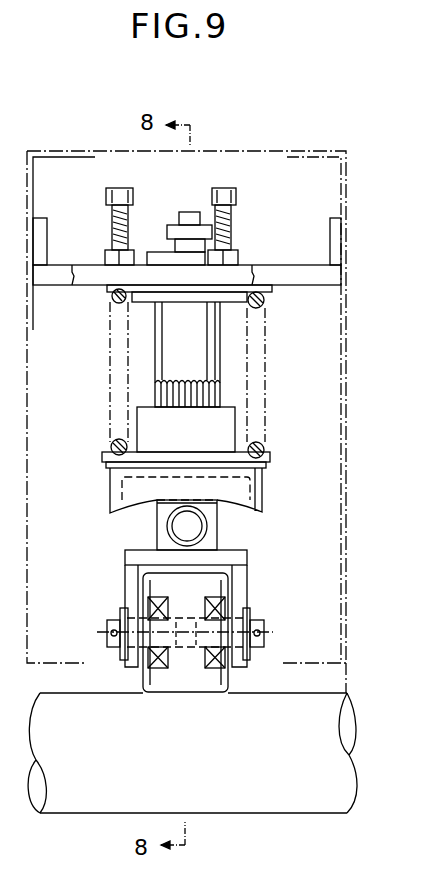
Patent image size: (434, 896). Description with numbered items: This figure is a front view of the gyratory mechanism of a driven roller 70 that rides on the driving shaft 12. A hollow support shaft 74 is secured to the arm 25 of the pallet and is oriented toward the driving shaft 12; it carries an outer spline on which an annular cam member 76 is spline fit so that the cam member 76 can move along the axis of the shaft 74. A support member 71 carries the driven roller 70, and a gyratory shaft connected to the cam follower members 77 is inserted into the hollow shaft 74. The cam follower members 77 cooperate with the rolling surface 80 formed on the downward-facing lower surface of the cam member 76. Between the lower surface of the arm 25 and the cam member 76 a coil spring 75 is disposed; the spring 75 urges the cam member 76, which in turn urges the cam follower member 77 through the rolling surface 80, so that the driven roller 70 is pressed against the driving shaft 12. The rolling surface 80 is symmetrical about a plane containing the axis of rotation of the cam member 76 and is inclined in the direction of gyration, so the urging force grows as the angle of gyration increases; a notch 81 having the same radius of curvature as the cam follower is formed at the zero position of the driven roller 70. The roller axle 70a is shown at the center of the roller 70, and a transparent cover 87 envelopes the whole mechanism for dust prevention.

The driving shaft 12 is at (333, 788).
The arm 25 is at (336, 281).
The driven roller 70 is at (240, 683).
The roller axle 70a is at (200, 633).
The support member 71 is at (238, 563).
The hollow support shaft 74 is at (215, 362).
The coil spring 75 is at (118, 356).
The annular cam member 76 is at (265, 500).
The cam follower member 77 is at (168, 531).
The rolling surface 80 is at (263, 510).
The notch 81 is at (182, 503).
The transparent cover 87 is at (342, 333).